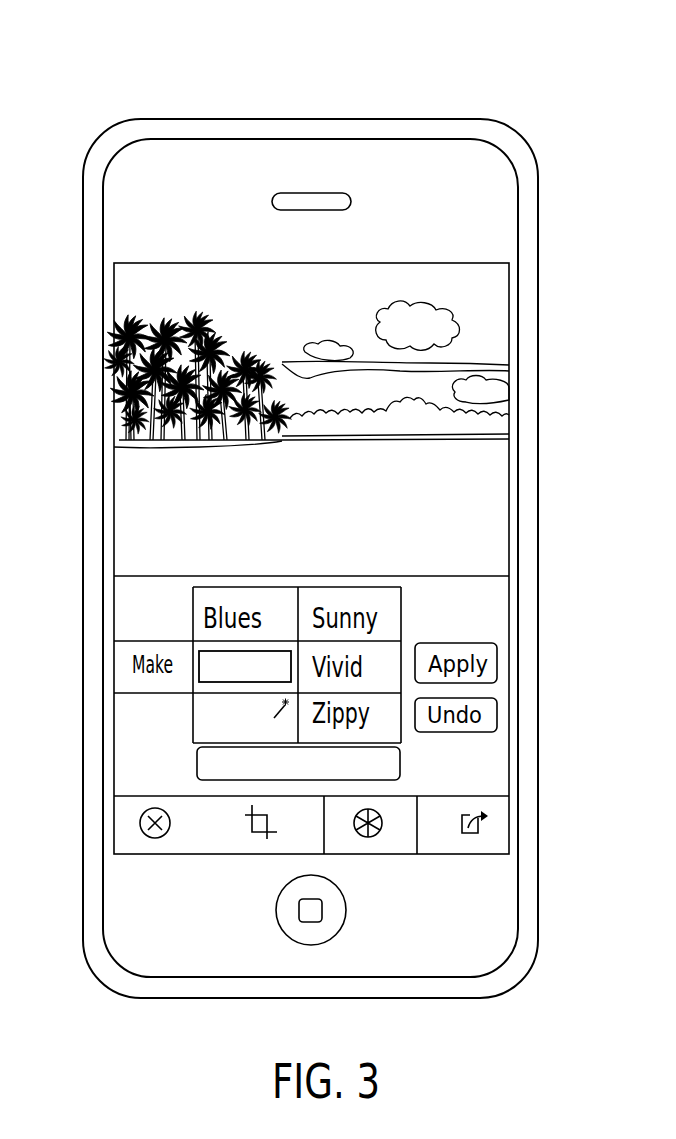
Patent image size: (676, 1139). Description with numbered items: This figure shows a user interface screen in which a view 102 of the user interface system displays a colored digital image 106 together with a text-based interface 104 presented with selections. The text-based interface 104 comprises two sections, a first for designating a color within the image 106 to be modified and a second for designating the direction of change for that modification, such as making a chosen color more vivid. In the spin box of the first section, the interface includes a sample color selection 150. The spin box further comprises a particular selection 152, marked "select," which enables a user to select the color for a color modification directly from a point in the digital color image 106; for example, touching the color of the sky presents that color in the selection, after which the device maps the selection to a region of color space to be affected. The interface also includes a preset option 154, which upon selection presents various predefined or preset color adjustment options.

The view 102 is at (434, 90).
The text-based interface 104 is at (483, 490).
The image 106 is at (483, 305).
The sample color selection 150 is at (200, 652).
The particular selection 152 is at (197, 707).
The preset option 154 is at (400, 765).